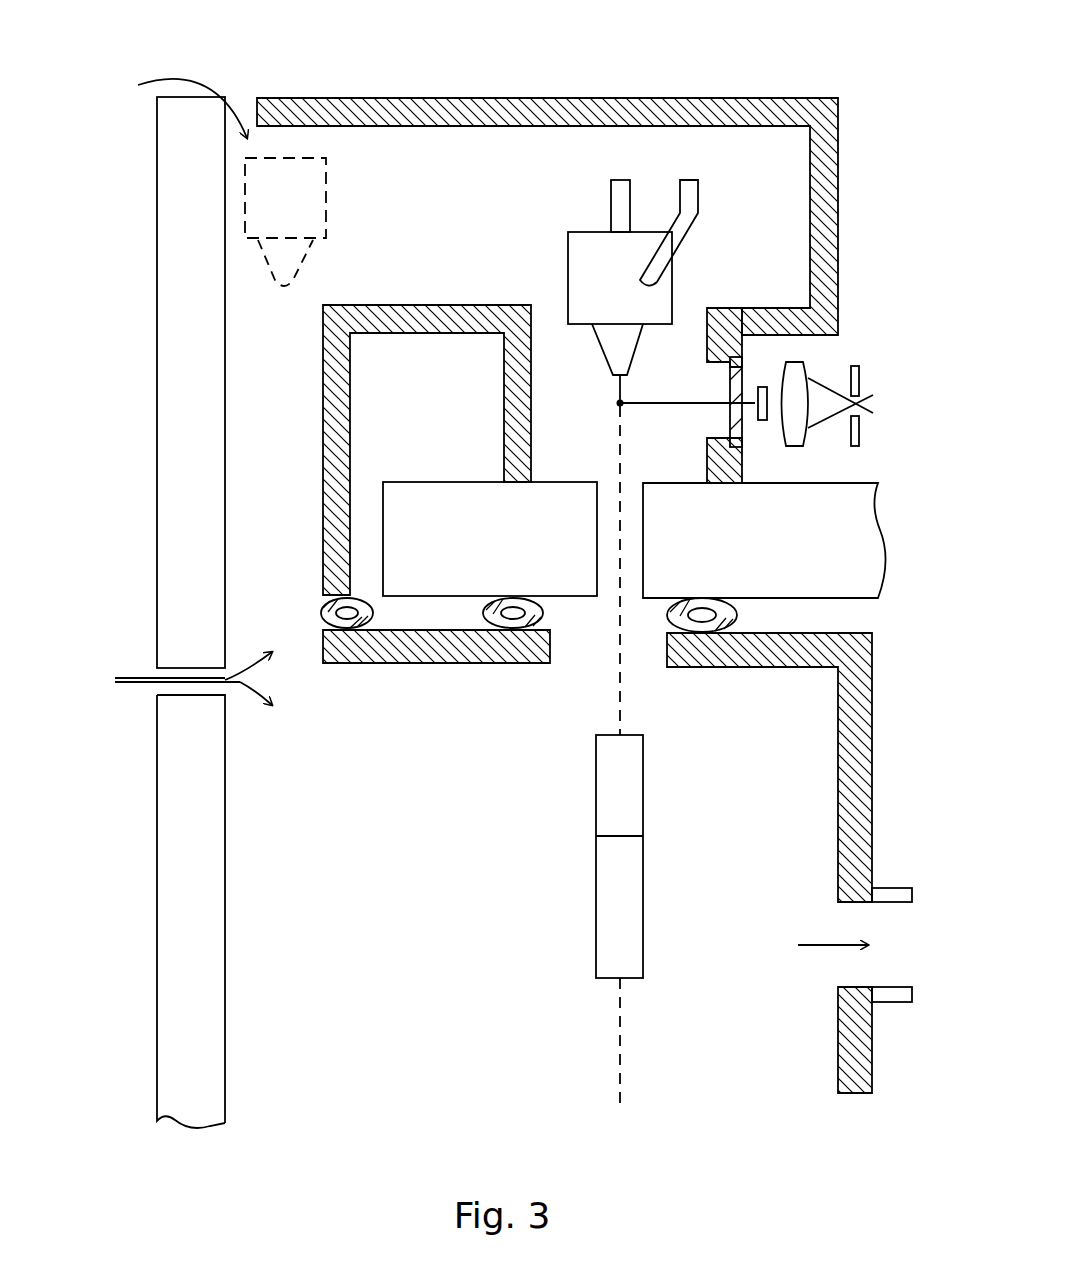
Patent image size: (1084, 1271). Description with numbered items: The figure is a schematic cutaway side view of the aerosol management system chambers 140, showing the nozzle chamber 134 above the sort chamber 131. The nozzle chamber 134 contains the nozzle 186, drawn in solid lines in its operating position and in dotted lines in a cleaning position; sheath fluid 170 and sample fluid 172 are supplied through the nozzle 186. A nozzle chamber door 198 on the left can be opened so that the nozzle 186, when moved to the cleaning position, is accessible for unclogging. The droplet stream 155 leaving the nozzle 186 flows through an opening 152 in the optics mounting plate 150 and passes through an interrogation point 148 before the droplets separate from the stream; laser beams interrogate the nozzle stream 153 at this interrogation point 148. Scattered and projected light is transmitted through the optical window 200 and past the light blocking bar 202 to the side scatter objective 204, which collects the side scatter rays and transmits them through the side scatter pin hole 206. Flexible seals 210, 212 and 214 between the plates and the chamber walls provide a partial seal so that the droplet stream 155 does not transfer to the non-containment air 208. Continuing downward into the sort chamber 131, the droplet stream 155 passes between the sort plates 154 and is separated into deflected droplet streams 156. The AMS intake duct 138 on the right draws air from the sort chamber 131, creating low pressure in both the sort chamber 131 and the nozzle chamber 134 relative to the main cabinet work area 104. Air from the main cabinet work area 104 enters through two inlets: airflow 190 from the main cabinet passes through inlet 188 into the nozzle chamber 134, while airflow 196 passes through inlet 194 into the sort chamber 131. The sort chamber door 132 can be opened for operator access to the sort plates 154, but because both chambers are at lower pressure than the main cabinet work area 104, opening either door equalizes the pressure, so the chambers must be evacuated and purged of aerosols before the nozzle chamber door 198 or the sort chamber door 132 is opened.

The main cabinet work area 104 is at (88, 612).
The sort chamber 131 is at (422, 918).
The sort chamber door 132 is at (225, 983).
The nozzle chamber 134 is at (458, 152).
The AMS intake duct 138 is at (885, 904).
The aerosol management system chambers 140 is at (130, 288).
The interrogation point 148 is at (615, 403).
The optics mounting plate 150 is at (474, 582).
The opening 152 is at (640, 575).
The nozzle stream 153 is at (624, 406).
The sort plates 154 is at (643, 766).
The droplet stream 155 is at (617, 437).
The deflected droplet streams 156 is at (621, 1068).
The sheath fluid 170 is at (689, 178).
The sample fluid 172 is at (621, 178).
The nozzle 186 is at (326, 173).
The inlet 188 is at (250, 104).
The airflow 190 is at (165, 80).
The inlet 194 is at (228, 677).
The airflow 196 is at (135, 682).
The nozzle chamber door 198 is at (213, 340).
The optical window 200 is at (742, 405).
The light blocking bar 202 is at (763, 420).
The side scatter objective 204 is at (800, 450).
The side scatter pin hole 206 is at (862, 392).
The non-containment air 208 is at (920, 198).
The flexible seal 210 is at (737, 616).
The flexible seal 212 is at (543, 614).
The flexible seal 214 is at (373, 614).